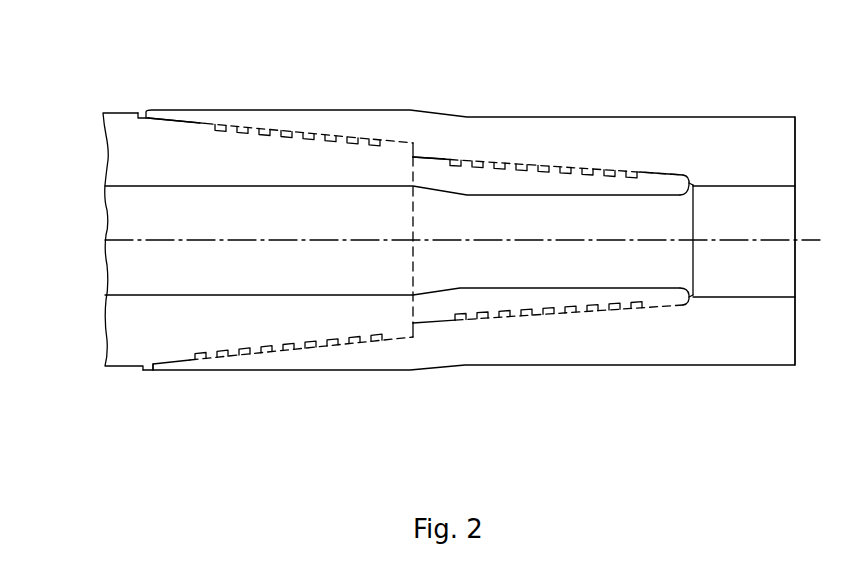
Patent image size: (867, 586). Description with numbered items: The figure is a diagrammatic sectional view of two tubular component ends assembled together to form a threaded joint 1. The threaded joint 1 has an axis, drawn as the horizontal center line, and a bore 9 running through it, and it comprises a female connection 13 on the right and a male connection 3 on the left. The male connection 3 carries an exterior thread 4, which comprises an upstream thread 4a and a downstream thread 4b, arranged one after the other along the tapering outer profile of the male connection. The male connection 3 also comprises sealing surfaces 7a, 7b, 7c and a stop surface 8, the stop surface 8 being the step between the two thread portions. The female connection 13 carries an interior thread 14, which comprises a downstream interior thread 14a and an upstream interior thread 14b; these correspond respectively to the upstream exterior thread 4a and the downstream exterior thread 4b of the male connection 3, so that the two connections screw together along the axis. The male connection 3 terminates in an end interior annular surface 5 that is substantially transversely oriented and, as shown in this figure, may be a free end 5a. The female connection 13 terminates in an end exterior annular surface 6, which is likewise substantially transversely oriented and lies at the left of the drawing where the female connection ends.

The threaded joint 1 is at (413, 51).
The male connection 3 is at (117, 112).
The exterior thread 4 is at (360, 129).
The upstream thread 4a is at (300, 127).
The downstream thread 4b is at (557, 165).
The end interior annular surface 5 is at (692, 181).
The free end 5a is at (689, 305).
The end exterior annular surface 6 is at (150, 368).
The sealing surface 7a is at (172, 118).
The sealing surface 7b is at (432, 157).
The sealing surface 7c is at (660, 173).
The stop surface 8 is at (414, 140).
The bore 9 is at (172, 186).
The female connection 13 is at (740, 112).
The interior thread 14 is at (375, 347).
The downstream interior thread 14a is at (312, 350).
The upstream interior thread 14b is at (523, 320).